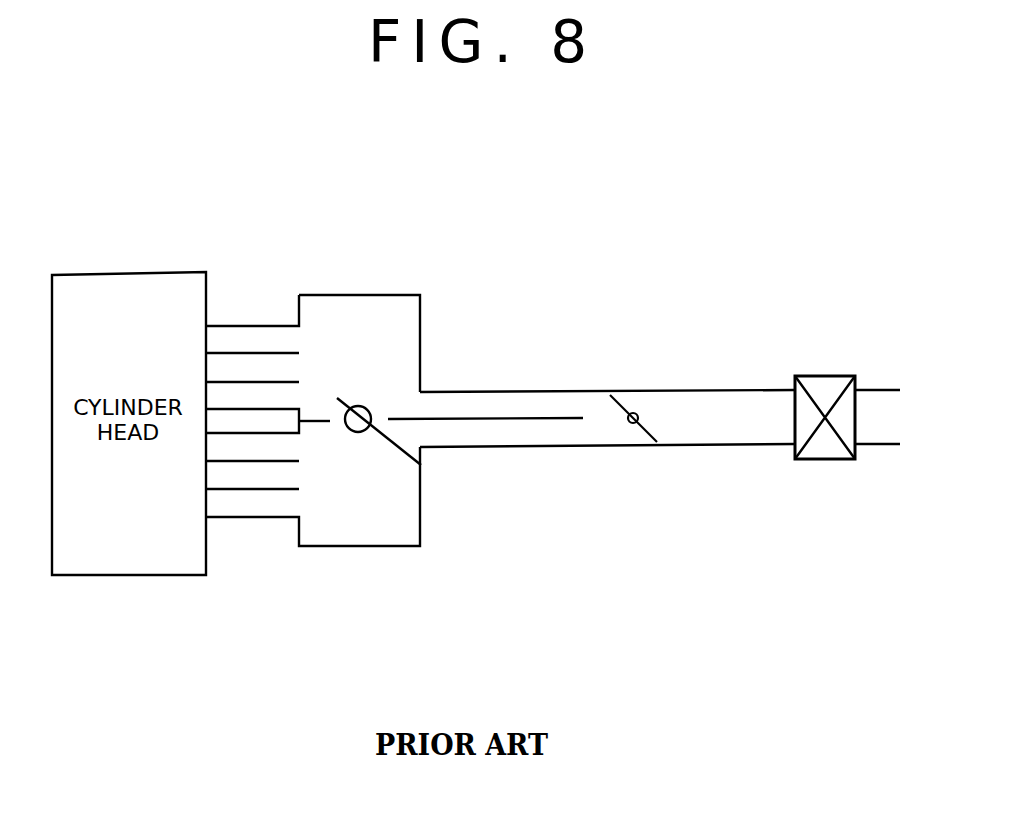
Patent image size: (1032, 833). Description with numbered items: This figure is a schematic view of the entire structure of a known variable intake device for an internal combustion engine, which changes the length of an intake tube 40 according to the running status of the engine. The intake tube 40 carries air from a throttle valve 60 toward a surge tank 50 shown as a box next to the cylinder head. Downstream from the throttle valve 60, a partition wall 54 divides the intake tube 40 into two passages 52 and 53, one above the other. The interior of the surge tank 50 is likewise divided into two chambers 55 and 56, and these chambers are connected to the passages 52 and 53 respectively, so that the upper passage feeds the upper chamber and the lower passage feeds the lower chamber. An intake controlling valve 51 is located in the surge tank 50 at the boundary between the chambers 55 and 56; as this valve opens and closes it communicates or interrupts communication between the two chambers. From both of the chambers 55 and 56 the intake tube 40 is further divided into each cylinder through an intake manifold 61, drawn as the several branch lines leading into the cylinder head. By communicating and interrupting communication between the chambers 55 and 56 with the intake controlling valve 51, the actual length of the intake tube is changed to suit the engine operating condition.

The intake tube 40 is at (713, 446).
The surge tank 50 is at (332, 546).
The intake controlling valve 51 is at (380, 439).
The passage 52 is at (560, 398).
The passage 53 is at (565, 438).
The partition wall 54 is at (398, 419).
The chamber 55 is at (378, 359).
The chamber 56 is at (337, 521).
The throttle valve 60 is at (632, 395).
The intake manifold 61 is at (247, 326).